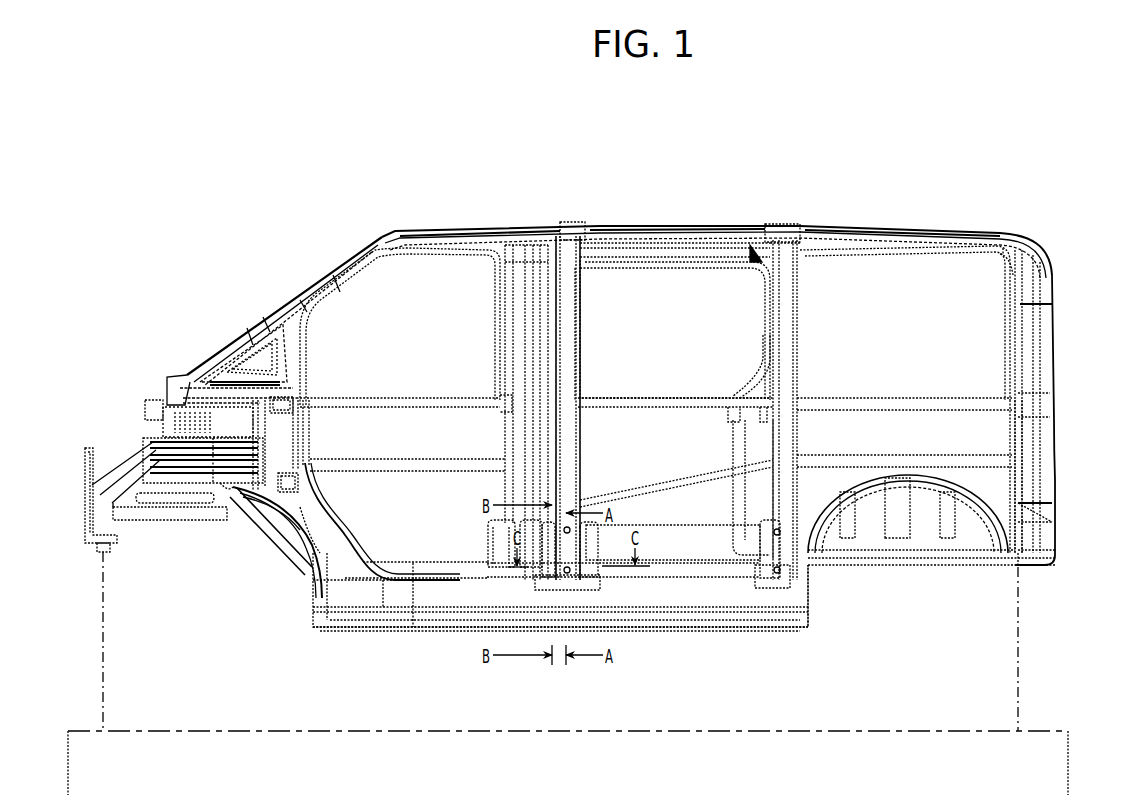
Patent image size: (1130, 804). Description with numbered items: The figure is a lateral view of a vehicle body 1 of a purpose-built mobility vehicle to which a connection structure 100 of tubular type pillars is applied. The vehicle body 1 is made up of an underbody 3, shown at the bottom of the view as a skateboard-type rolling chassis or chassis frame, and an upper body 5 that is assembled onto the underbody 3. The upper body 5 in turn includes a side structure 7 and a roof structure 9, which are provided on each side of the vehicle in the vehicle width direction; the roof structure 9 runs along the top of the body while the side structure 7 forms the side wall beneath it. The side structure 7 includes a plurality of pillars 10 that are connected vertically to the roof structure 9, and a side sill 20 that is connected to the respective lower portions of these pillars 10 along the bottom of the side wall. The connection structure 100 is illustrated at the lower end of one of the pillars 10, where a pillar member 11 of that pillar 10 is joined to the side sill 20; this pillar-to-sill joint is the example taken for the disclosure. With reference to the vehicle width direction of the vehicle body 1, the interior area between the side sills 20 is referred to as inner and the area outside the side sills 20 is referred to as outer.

The vehicle body 1 is at (633, 132).
The roof structure 9 is at (724, 222).
The side structure 7 is at (586, 392).
The pillar 10 is at (575, 450).
The connection structure of tubular type pillars 100 is at (608, 533).
The pillar member 11 is at (570, 560).
The side sill 20 is at (440, 638).
The upper body 5 is at (1072, 356).
The underbody 3 is at (1053, 728).